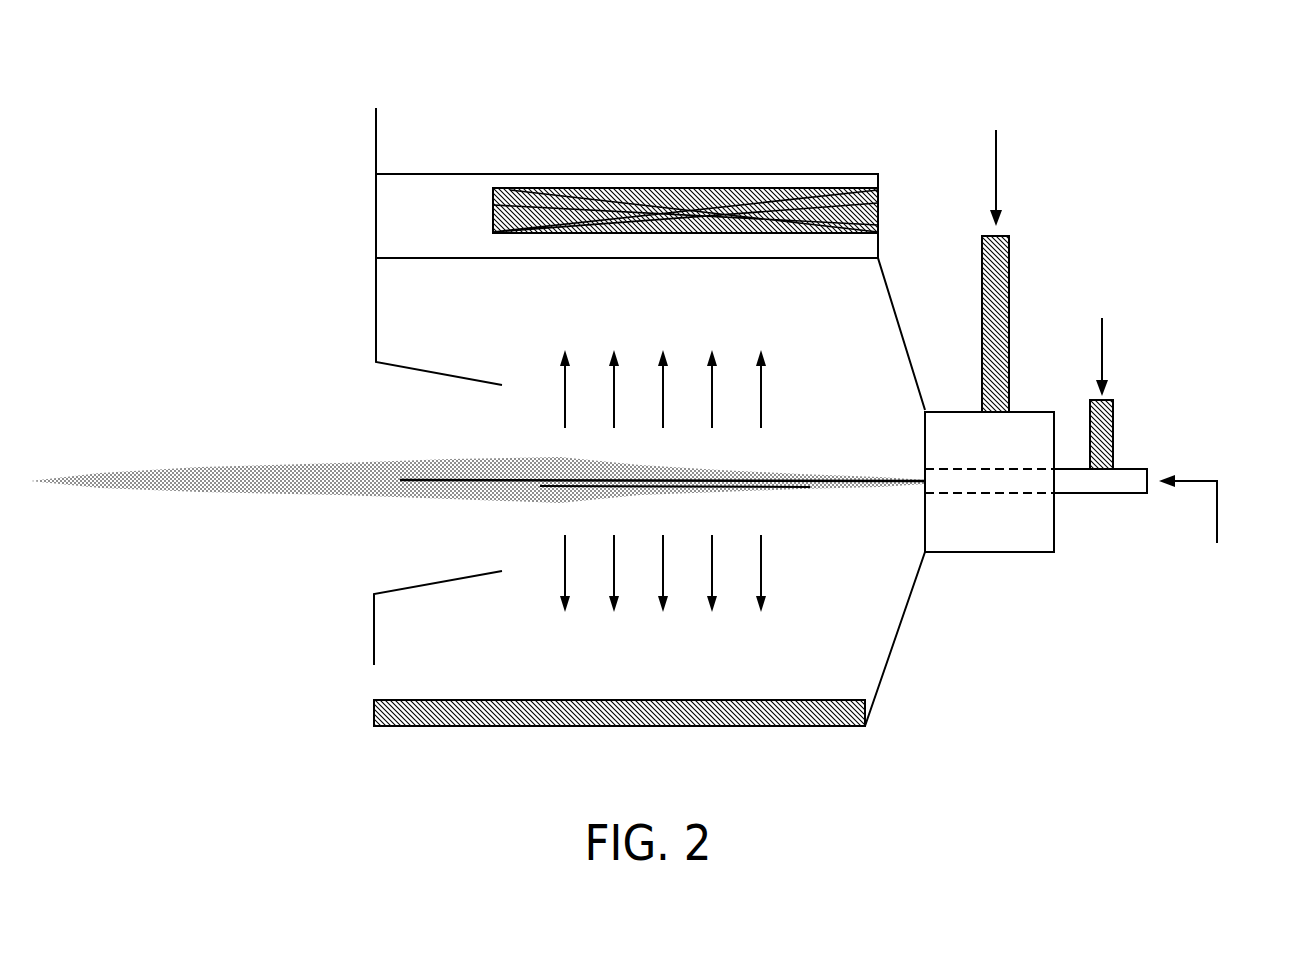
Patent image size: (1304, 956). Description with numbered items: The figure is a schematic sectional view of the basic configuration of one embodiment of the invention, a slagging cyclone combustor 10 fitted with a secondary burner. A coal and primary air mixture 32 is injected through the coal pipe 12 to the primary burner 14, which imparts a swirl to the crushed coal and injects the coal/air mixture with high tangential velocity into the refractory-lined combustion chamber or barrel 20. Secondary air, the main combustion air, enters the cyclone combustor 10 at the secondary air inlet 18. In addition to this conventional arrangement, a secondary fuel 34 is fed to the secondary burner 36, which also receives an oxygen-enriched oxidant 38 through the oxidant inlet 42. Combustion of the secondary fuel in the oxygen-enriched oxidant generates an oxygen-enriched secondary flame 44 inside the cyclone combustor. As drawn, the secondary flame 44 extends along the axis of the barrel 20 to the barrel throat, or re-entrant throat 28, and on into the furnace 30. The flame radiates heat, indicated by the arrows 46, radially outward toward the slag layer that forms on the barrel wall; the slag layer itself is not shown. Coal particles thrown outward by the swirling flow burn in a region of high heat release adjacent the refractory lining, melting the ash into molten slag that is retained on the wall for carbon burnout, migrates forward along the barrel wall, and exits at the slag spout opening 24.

The cyclone combustor 10 is at (730, 120).
The coal pipe 12 is at (1010, 272).
The primary burner 14 is at (993, 552).
The secondary air inlet 18 is at (518, 212).
The barrel 20 is at (690, 720).
The slag spout opening 24 is at (377, 683).
The re-entrant throat 28 is at (433, 360).
The furnace 30 is at (268, 382).
The coal and primary air mixture 32 is at (997, 156).
The secondary fuel 34 is at (1218, 518).
The secondary burner 36 is at (1105, 493).
The oxygen-enriched oxidant 38 is at (1104, 350).
The oxidant inlet 42 is at (1113, 432).
The oxygen-enriched secondary flame 44 is at (805, 486).
The arrows 46 is at (762, 395).